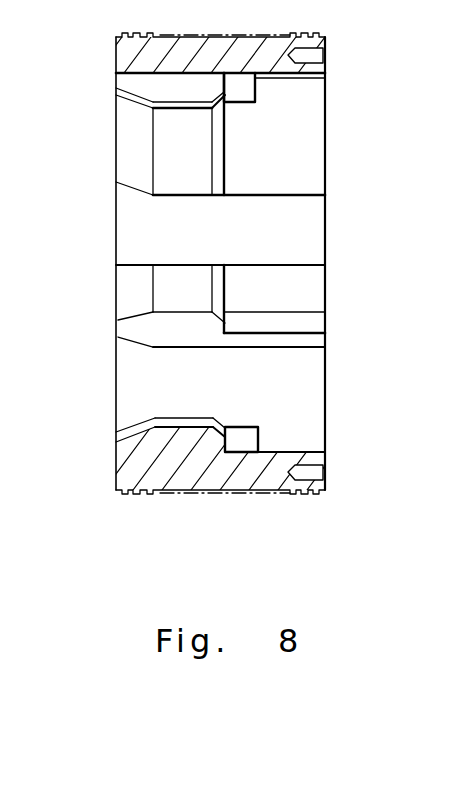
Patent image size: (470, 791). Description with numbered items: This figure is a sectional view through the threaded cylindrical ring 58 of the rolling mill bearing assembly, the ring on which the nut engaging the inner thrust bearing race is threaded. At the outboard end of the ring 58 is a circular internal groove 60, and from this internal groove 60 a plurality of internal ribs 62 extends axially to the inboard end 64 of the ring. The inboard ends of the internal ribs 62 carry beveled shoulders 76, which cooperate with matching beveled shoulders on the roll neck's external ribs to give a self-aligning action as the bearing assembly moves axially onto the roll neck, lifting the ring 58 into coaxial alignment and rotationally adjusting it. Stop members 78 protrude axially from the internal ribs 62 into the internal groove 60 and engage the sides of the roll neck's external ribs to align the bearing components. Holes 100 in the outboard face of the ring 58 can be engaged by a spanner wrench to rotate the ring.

The cylindrical ring 58 is at (372, 247).
The circular internal groove 60 is at (290, 83).
The internal ribs 62 is at (183, 442).
The inboard end 64 is at (115, 295).
The beveled shoulders 76 is at (135, 102).
The stop members 78 is at (236, 93).
The holes 100 is at (312, 54).